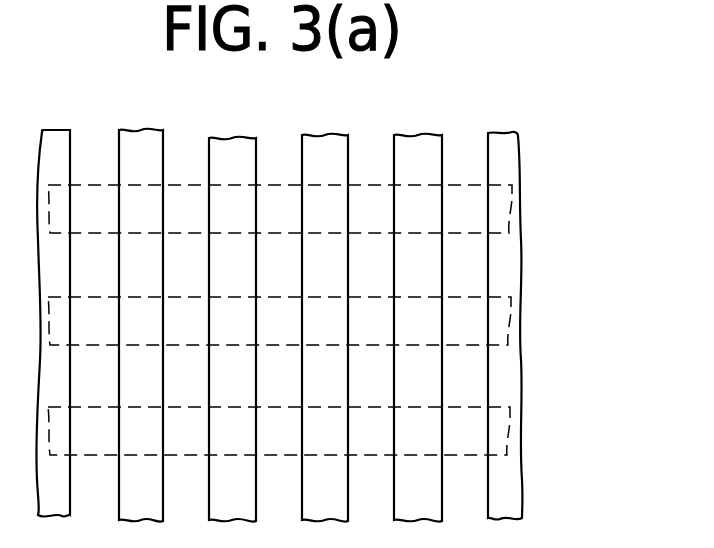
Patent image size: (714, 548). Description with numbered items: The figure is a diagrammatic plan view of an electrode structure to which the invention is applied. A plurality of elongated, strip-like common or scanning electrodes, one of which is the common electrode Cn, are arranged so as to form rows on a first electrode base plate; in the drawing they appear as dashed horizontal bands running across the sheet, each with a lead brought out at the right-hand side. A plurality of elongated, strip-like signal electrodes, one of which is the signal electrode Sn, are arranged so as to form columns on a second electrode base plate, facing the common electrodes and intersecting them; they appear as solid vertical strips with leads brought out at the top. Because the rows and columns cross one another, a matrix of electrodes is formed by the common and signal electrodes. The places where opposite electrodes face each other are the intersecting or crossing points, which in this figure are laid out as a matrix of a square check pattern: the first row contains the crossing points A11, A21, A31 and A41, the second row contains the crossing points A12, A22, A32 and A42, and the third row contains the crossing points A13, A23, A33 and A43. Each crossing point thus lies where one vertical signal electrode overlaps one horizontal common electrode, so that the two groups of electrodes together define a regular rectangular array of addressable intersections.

The signal electrode Sn is at (142, 164).
The common electrode Cn is at (498, 213).
The intersecting point A11 is at (141, 209).
The intersecting point A21 is at (232, 209).
The intersecting point A31 is at (325, 209).
The intersecting point A41 is at (418, 209).
The intersecting point A12 is at (141, 321).
The intersecting point A22 is at (232, 321).
The intersecting point A32 is at (325, 321).
The intersecting point A42 is at (418, 321).
The intersecting point A13 is at (141, 431).
The intersecting point A23 is at (232, 431).
The intersecting point A33 is at (325, 431).
The intersecting point A43 is at (418, 431).